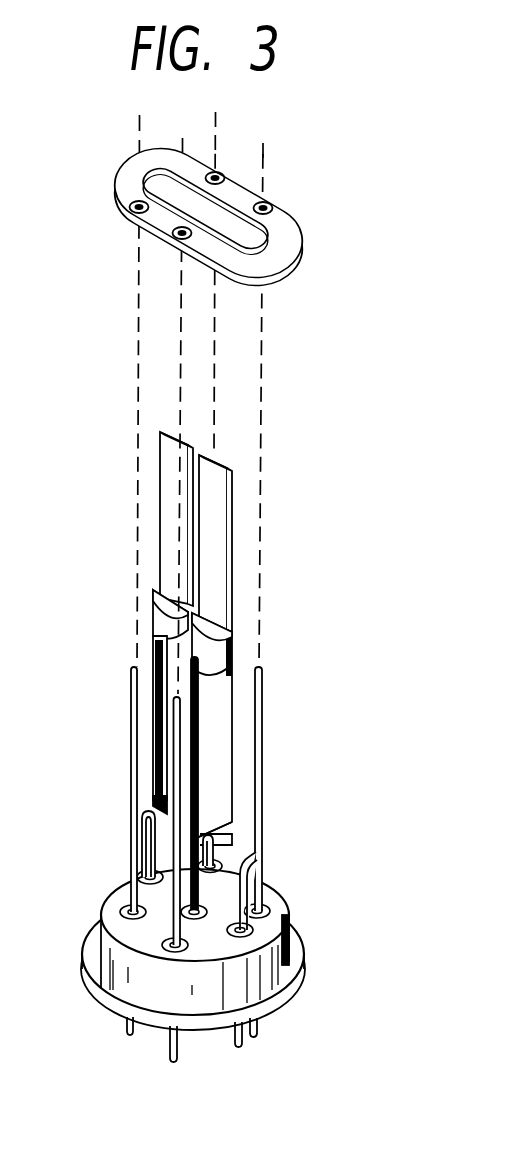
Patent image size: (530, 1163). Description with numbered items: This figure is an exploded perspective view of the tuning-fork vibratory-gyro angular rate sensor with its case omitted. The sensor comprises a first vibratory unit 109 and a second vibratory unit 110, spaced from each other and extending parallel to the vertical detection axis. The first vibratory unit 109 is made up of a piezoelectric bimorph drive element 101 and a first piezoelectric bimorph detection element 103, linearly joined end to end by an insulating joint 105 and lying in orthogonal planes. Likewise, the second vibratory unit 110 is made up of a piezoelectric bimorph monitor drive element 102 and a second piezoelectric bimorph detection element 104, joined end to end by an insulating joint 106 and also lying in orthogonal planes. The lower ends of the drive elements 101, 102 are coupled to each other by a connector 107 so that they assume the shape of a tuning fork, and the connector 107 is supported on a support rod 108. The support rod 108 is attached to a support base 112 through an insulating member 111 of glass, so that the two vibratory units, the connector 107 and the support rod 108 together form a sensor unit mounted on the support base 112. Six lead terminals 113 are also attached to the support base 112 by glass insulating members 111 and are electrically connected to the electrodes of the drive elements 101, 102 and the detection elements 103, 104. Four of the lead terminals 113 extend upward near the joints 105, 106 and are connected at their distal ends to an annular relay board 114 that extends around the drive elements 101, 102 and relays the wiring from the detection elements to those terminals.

The piezoelectric bimorph drive element 101 is at (170, 667).
The piezoelectric bimorph monitor drive element 102 is at (220, 699).
The first piezoelectric bimorph detection element 103 is at (170, 471).
The second piezoelectric bimorph detection element 104 is at (220, 494).
The insulating joint 105 is at (166, 617).
The insulating joint 106 is at (233, 660).
The connector 107 is at (160, 798).
The support rod 108 is at (236, 885).
The first vibratory unit 109 is at (158, 437).
The second vibratory unit 110 is at (234, 458).
The insulating member 111 is at (222, 858).
The support base 112 is at (108, 950).
The lead terminals 113 is at (128, 740).
The relay board 114 is at (297, 225).